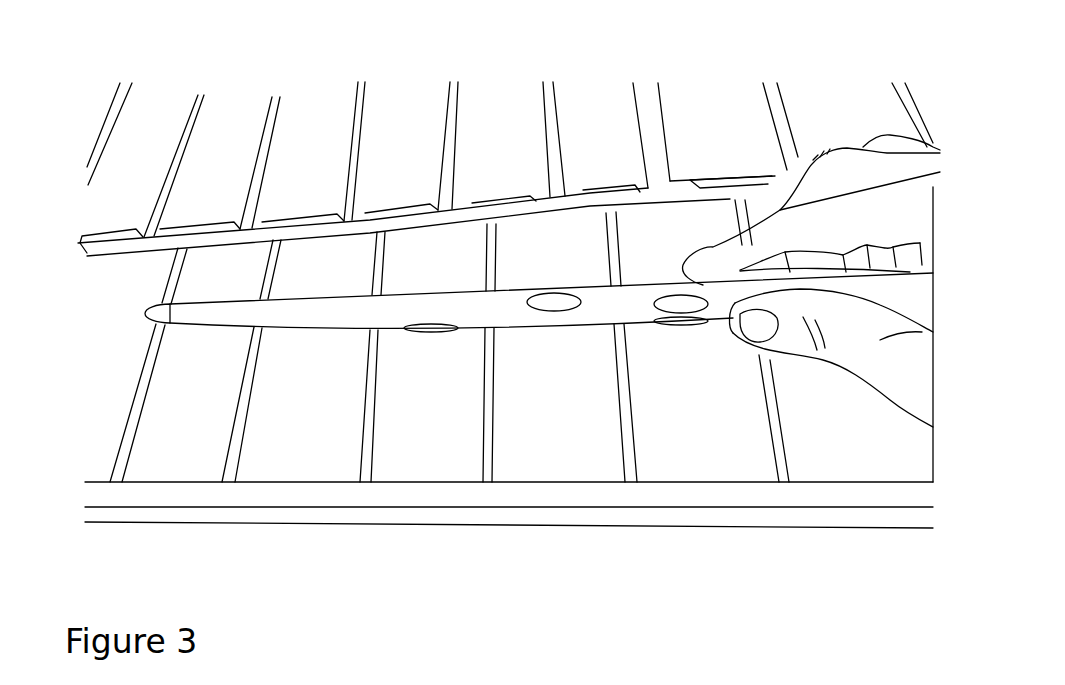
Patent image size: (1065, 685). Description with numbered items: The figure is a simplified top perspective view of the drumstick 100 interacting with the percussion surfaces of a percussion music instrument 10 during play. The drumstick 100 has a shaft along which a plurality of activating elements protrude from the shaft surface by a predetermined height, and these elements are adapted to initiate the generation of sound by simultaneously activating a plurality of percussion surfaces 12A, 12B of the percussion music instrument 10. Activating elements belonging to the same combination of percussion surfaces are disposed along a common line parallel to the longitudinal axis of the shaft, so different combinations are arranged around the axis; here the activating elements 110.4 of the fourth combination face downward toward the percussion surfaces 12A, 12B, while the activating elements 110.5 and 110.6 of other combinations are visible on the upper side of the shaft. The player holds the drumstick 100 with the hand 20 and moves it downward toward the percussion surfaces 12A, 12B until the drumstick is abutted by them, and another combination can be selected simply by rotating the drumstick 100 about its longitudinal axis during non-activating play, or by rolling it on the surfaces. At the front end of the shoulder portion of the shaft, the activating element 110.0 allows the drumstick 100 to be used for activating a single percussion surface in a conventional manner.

The percussion music instrument 10 is at (347, 227).
The percussion surface 12A is at (448, 383).
The percussion surface 12B is at (712, 393).
The player's hand 20 is at (770, 242).
The drumstick 100 is at (434, 272).
The activating element 110.0 is at (157, 312).
The activating element 110.4 is at (428, 332).
The activating element 110.5 is at (665, 305).
The activating element 110.6 is at (556, 300).